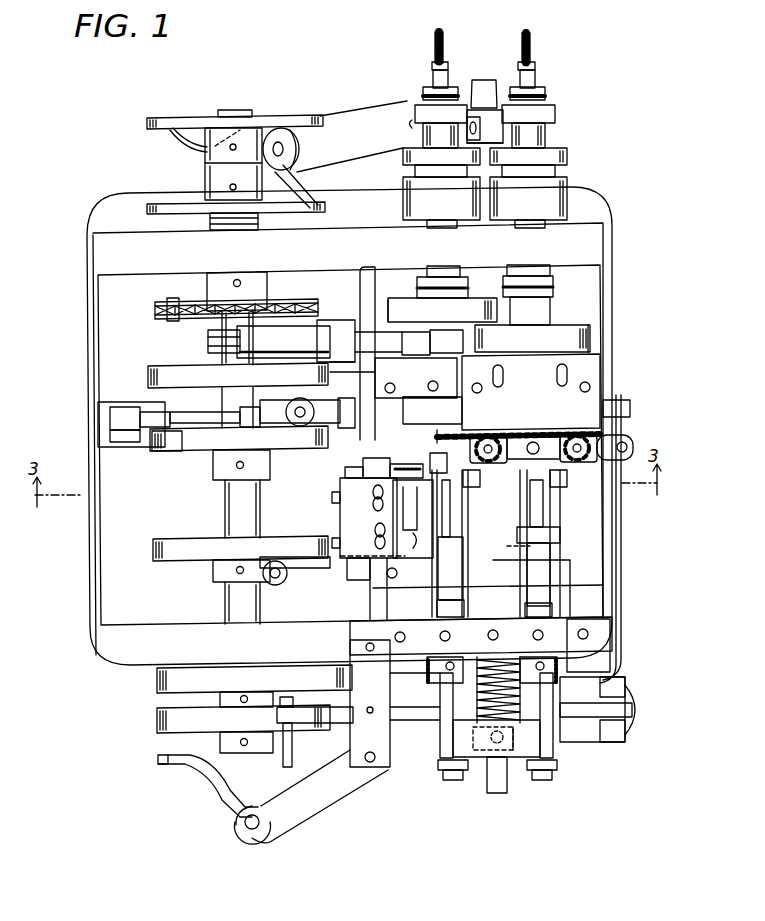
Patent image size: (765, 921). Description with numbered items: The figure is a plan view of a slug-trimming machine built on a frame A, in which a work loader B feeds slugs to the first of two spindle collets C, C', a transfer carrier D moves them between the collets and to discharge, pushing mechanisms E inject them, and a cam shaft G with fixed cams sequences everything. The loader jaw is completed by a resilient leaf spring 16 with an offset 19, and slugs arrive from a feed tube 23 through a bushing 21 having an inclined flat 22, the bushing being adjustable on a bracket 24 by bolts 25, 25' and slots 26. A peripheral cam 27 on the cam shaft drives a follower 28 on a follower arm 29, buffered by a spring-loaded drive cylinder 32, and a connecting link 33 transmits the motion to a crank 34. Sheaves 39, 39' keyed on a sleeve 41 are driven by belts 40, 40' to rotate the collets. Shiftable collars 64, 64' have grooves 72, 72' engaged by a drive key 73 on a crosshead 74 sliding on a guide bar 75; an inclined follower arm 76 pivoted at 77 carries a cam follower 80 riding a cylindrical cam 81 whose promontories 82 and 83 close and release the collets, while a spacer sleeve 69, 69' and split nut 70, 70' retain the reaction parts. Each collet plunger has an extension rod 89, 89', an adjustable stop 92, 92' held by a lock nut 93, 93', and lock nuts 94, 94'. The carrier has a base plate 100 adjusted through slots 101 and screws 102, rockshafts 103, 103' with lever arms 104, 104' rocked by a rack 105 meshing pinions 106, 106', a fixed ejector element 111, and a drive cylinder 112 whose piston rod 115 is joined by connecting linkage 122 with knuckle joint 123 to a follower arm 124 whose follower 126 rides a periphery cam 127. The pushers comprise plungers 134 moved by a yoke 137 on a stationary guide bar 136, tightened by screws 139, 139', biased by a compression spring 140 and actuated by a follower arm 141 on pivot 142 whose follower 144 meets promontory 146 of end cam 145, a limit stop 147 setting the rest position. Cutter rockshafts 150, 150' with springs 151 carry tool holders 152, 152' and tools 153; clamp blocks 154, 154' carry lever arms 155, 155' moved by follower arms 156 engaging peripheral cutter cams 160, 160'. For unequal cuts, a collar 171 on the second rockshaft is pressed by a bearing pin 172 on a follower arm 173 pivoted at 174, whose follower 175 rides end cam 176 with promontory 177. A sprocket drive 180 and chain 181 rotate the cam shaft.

The frame A is at (79, 293).
The work loader B is at (349, 471).
The spindle collet C is at (480, 440).
The transfer carrier D is at (626, 436).
The pushing mechanism E is at (452, 527).
The cam shaft G is at (216, 497).
The resilient leaf spring 16 is at (415, 463).
The offset 19 is at (448, 460).
The bushing 21 is at (413, 487).
The inclined flat 22 is at (395, 462).
The feed tube 23 is at (424, 541).
The bracket 24 is at (345, 492).
The bolt 25 is at (343, 502).
The bolt 25' is at (323, 582).
The slots 26 is at (373, 512).
The peripheral cam 27 is at (165, 366).
The follower 28 is at (338, 378).
The follower arm 29 is at (340, 320).
The spring-loaded drive cylinder 32 is at (236, 339).
The connecting link 33 is at (377, 330).
The crank 34 is at (424, 346).
The sheave 39 is at (405, 281).
The sheave 39' is at (616, 319).
The belt 40 is at (442, 283).
The belt 40' is at (532, 321).
The sleeve 41 is at (445, 266).
The shiftable collar 64 is at (422, 202).
The shiftable collar 64' is at (552, 199).
The spacer sleeve 69 is at (414, 138).
The spacer sleeve 69' is at (550, 130).
The split nut 70 is at (422, 105).
The split nut 70' is at (545, 106).
The circumferential groove 72 is at (421, 166).
The circumferential groove 72' is at (545, 162).
The drive key 73 is at (492, 170).
The crosshead 74 is at (486, 110).
The guide bar 75 is at (472, 81).
The inclined follower arm 76 is at (329, 115).
The pivot 77 is at (411, 125).
The cam follower 80 is at (296, 128).
The cylindrical cam 81 is at (150, 124).
The promontory 82 is at (316, 209).
The promontory 83 is at (170, 136).
The extension rod 89 is at (429, 35).
The extension rod 89' is at (542, 37).
The adjustable stop 92 is at (423, 68).
The adjustable stop 92' is at (547, 71).
The lock nut 93 is at (428, 85).
The lock nut 93' is at (543, 87).
The lock nuts 94 is at (424, 49).
The lock nuts 94' is at (544, 52).
The base plate 100 is at (599, 357).
The slots 101 is at (504, 370).
The screws 102 is at (562, 380).
The rockshaft 103 is at (494, 436).
The rockshaft 103' is at (582, 435).
The lever arm 104 is at (533, 434).
The lever arm 104' is at (645, 441).
The rack 105 is at (452, 433).
The pinion 106 is at (507, 497).
The pinion 106' is at (626, 471).
The fixed ejector element 111 is at (627, 418).
The spring-loaded drive cylinder 112 is at (418, 396).
The piston rod 115 is at (378, 396).
The connecting linkage 122 is at (203, 412).
The knuckle joint 123 is at (288, 410).
The follower arm 124 is at (112, 413).
The follower 126 is at (160, 452).
The periphery cam 127 is at (200, 451).
The plunger 134 is at (444, 598).
The stationary guide bar 136 is at (494, 796).
The yoke 137 is at (474, 759).
The screw 139 is at (432, 734).
The screw 139' is at (570, 726).
The compression spring 140 is at (515, 760).
The follower arm 141 is at (288, 822).
The pivot 142 is at (373, 770).
The follower 144 is at (235, 822).
The end cam 145 is at (158, 759).
The promontory 146 is at (210, 780).
The limit stop 147 is at (283, 760).
The rockshaft 150 is at (469, 544).
The rockshaft 150' is at (562, 543).
The spring 151 is at (440, 660).
The tool holder 152 is at (481, 484).
The tool holder 152' is at (574, 485).
The tool 153 is at (462, 490).
The clamp block 154 is at (410, 699).
The clamp block 154' is at (565, 680).
The lever arm 155 is at (481, 668).
The lever arm 155' is at (652, 680).
The follower arm 156 is at (343, 668).
The peripheral cutter cam 160 is at (204, 686).
The peripheral cutter cam 160' is at (204, 729).
The collar 171 is at (560, 539).
The bearing pin 172 is at (507, 546).
The follower arm 173 is at (565, 561).
The pivot 174 is at (397, 575).
The follower 175 is at (280, 588).
The end cam 176 is at (170, 540).
The promontory 177 is at (311, 560).
The sprocket drive 180 is at (186, 301).
The chain 181 is at (158, 312).